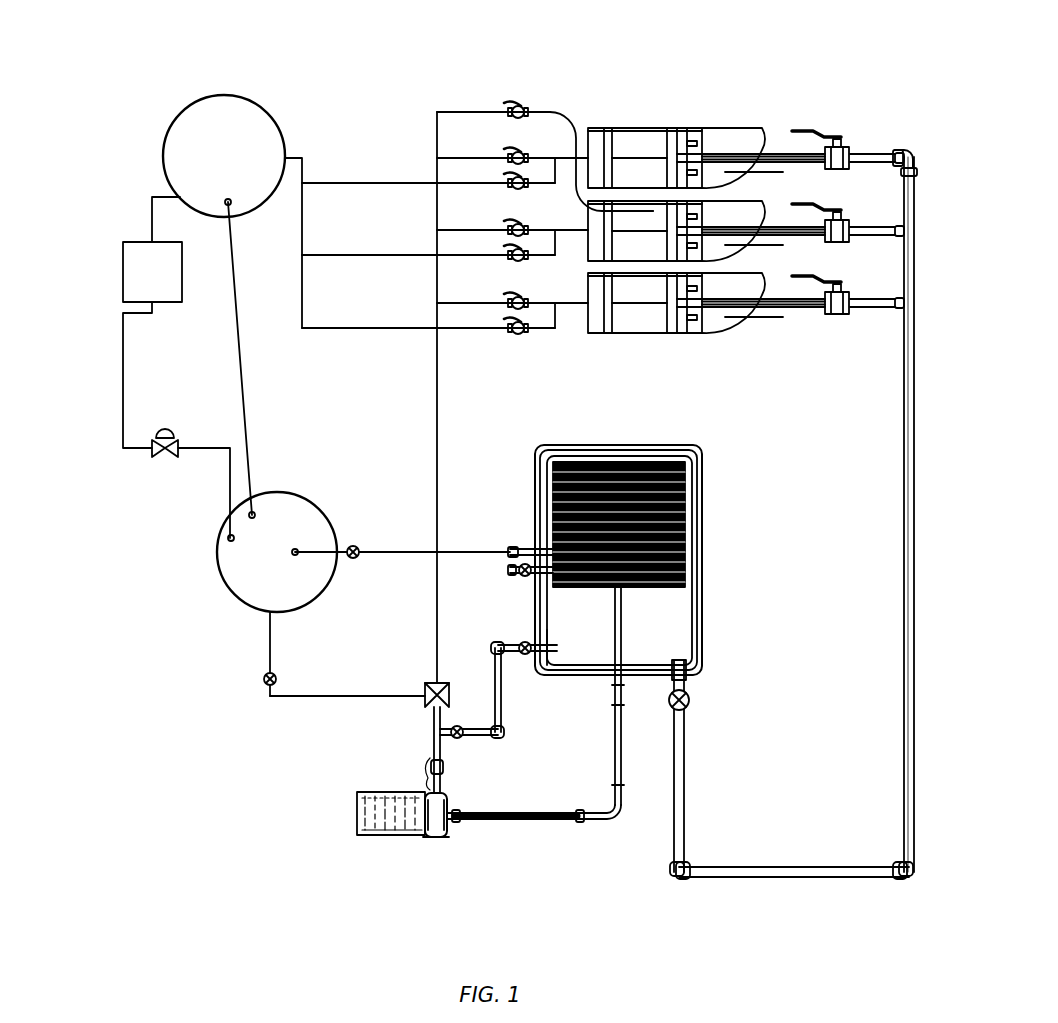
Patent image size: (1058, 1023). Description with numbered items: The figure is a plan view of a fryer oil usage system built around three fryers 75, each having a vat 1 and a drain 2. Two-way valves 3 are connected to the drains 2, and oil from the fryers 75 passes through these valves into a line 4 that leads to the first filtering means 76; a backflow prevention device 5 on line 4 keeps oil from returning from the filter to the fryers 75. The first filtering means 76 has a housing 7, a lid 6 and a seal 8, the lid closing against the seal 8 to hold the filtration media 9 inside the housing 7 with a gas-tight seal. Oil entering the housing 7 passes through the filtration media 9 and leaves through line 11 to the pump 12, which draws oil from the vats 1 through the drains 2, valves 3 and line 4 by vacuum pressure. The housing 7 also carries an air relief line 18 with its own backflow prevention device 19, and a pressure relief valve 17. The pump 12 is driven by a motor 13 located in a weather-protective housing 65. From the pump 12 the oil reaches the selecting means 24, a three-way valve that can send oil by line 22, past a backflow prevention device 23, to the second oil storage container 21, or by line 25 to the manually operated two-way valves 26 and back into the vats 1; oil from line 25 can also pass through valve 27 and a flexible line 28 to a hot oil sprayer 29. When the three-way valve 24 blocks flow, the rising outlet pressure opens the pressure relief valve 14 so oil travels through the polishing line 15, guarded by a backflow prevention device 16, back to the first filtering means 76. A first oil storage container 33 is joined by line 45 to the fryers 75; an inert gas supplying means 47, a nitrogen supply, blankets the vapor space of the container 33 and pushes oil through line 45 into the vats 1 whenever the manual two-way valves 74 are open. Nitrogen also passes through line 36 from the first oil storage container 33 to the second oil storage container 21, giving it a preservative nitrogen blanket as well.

The vat 1 is at (641, 128).
The drain 2 is at (718, 140).
The two-way valve 3 is at (843, 140).
The line 4 is at (908, 242).
The backflow prevention device 5 is at (690, 705).
The lid 6 is at (680, 636).
The housing 7 is at (680, 598).
The seal 8 is at (697, 527).
The filtration media 9 is at (685, 485).
The line 11 is at (588, 818).
The pump 12 is at (440, 838).
The motor 13 is at (372, 830).
The pressure relief valve 14 is at (457, 742).
The polishing line 15 is at (505, 735).
The backflow prevention device 16 is at (520, 645).
The pressure relief valve 17 is at (518, 576).
The air relief line 18 is at (525, 548).
The backflow prevention device 19 is at (355, 545).
The second oil storage container 21 is at (292, 500).
The line 22 is at (268, 640).
The backflow prevention device 23 is at (265, 683).
The selecting means 24 is at (430, 700).
The line 25 is at (442, 398).
The valve 26 is at (512, 150).
The valve 27 is at (510, 106).
The flexible line 28 is at (575, 138).
The hot oil sprayer 29 is at (645, 208).
The first oil storage container 33 is at (258, 112).
The line 36 is at (240, 402).
The line 45 is at (303, 235).
The inert gas supplying means 47 is at (123, 252).
The weather-protective housing 65 is at (362, 812).
The valve 74 is at (520, 190).
The fryer 75 is at (706, 122).
The first filtering means 76 is at (618, 445).